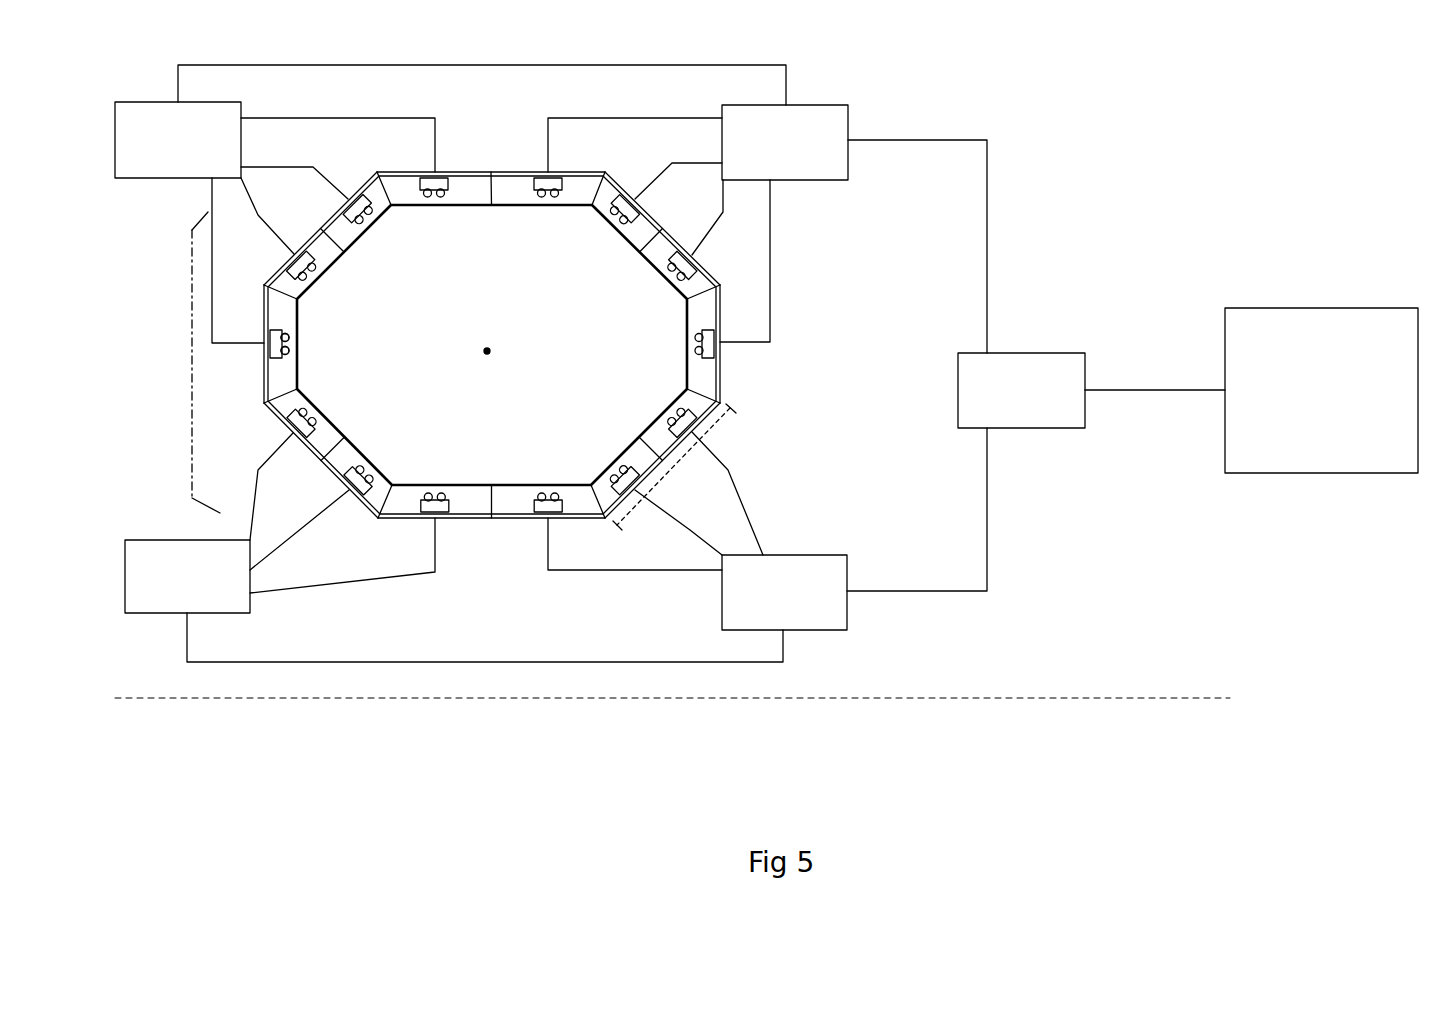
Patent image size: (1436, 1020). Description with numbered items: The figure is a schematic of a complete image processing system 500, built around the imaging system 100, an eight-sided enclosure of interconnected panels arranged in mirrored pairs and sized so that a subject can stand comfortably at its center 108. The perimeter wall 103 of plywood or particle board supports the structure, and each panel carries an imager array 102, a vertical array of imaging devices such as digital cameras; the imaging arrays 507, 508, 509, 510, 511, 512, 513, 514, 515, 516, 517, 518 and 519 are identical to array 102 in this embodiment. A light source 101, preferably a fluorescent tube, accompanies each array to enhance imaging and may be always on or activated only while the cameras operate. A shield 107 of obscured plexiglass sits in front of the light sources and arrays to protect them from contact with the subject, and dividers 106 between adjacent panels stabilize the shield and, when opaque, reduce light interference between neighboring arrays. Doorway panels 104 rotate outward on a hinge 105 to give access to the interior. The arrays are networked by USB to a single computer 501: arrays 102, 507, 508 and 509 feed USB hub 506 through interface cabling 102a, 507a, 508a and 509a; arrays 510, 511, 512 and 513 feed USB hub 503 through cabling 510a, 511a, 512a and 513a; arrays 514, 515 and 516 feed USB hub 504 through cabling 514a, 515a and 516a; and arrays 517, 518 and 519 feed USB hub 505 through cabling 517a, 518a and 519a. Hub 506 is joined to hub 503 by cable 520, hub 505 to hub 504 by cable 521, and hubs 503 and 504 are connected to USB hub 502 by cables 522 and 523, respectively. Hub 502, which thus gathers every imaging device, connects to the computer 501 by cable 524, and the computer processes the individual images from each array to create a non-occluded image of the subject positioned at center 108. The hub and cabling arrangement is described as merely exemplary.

The imaging system 100 is at (181, 362).
The light source 101 is at (292, 338).
The imager array 102 is at (284, 361).
The interface cabling 102a is at (238, 261).
The perimeter wall 103 is at (481, 170).
The doorway panels 104 is at (719, 432).
The hinge 105 is at (727, 407).
The divider 106 is at (491, 521).
The shield 107 is at (344, 425).
The center 108 is at (497, 345).
The image processing system 500 is at (672, 716).
The computer 501 is at (1268, 477).
The USB hub 502 is at (1037, 430).
The USB hub 503 is at (856, 128).
The USB hub 504 is at (850, 604).
The USB hub 505 is at (228, 616).
The USB hub 506 is at (126, 97).
The imaging array 507 is at (325, 280).
The imaging array 508 is at (379, 225).
The imaging array 509 is at (452, 197).
The imaging array 510 is at (545, 199).
The imaging array 511 is at (615, 215).
The imaging array 512 is at (660, 273).
The imaging array 513 is at (694, 347).
The imaging array 514 is at (666, 411).
The imaging array 515 is at (618, 453).
The imaging array 516 is at (549, 494).
The imaging array 517 is at (438, 496).
The imaging array 518 is at (368, 468).
The imaging array 519 is at (313, 425).
The interface cabling 507a is at (269, 216).
The interface cabling 508a is at (294, 173).
The interface cabling 509a is at (338, 135).
The interface cabling 510a is at (635, 135).
The interface cabling 511a is at (677, 180).
The interface cabling 512a is at (701, 218).
The interface cabling 513a is at (745, 262).
The interface cabling 514a is at (730, 493).
The interface cabling 515a is at (678, 522).
The interface cabling 516a is at (635, 544).
The interface cabling 517a is at (342, 555).
The interface cabling 518a is at (299, 530).
The interface cabling 519a is at (263, 485).
The cable 520 is at (482, 74).
The cable 521 is at (485, 637).
The cable 522 is at (988, 146).
The cable 523 is at (988, 535).
The cable 524 is at (1116, 386).